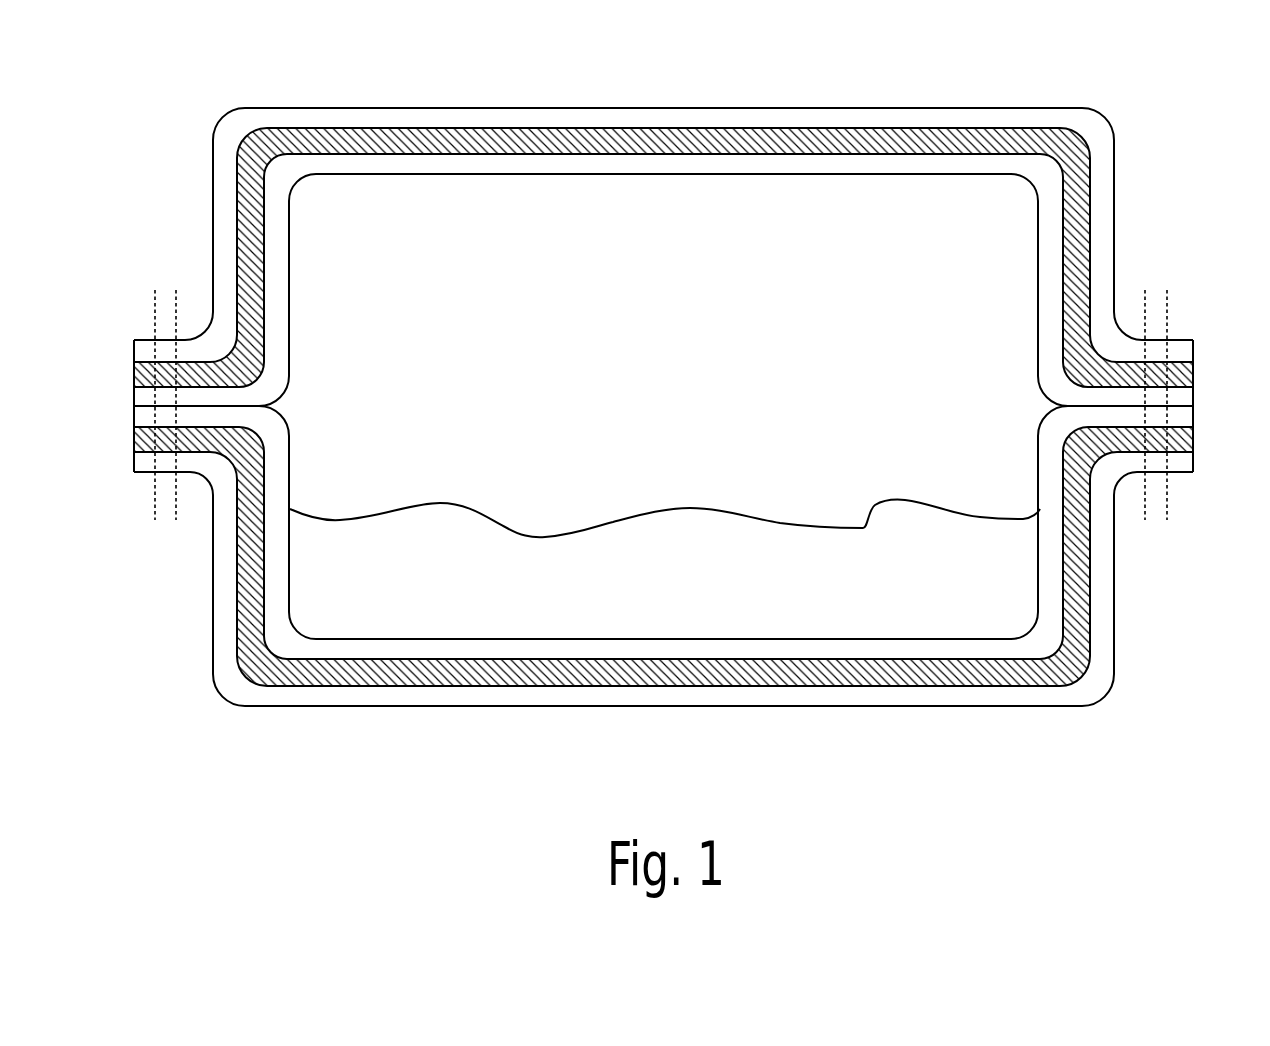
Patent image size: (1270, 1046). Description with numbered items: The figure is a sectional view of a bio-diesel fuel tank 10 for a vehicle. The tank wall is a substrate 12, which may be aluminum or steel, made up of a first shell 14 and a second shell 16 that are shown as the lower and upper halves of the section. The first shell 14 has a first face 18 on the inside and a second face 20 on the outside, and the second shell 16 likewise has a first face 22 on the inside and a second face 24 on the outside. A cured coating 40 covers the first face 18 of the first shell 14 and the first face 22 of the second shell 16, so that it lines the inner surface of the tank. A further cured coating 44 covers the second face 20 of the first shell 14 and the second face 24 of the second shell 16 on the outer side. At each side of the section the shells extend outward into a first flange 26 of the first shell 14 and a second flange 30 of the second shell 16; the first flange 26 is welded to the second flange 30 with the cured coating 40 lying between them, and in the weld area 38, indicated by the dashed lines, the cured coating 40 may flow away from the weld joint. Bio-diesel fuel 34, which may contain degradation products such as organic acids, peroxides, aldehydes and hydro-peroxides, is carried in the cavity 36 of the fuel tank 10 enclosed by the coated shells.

The fuel tank 10 is at (1158, 692).
The substrate 12 is at (858, 147).
The first shell 14 is at (702, 673).
The second shell 16 is at (765, 147).
The first face 18 is at (560, 660).
The second face 20 is at (573, 672).
The first face 22 is at (490, 150).
The second face 24 is at (575, 128).
The first flange 26 is at (146, 450).
The second flange 30 is at (175, 363).
The bio-diesel fuel 34 is at (855, 612).
The cavity 36 is at (917, 272).
The weld area 38 is at (176, 528).
The cured coating 40 is at (148, 401).
The cured coating 44 is at (380, 115).